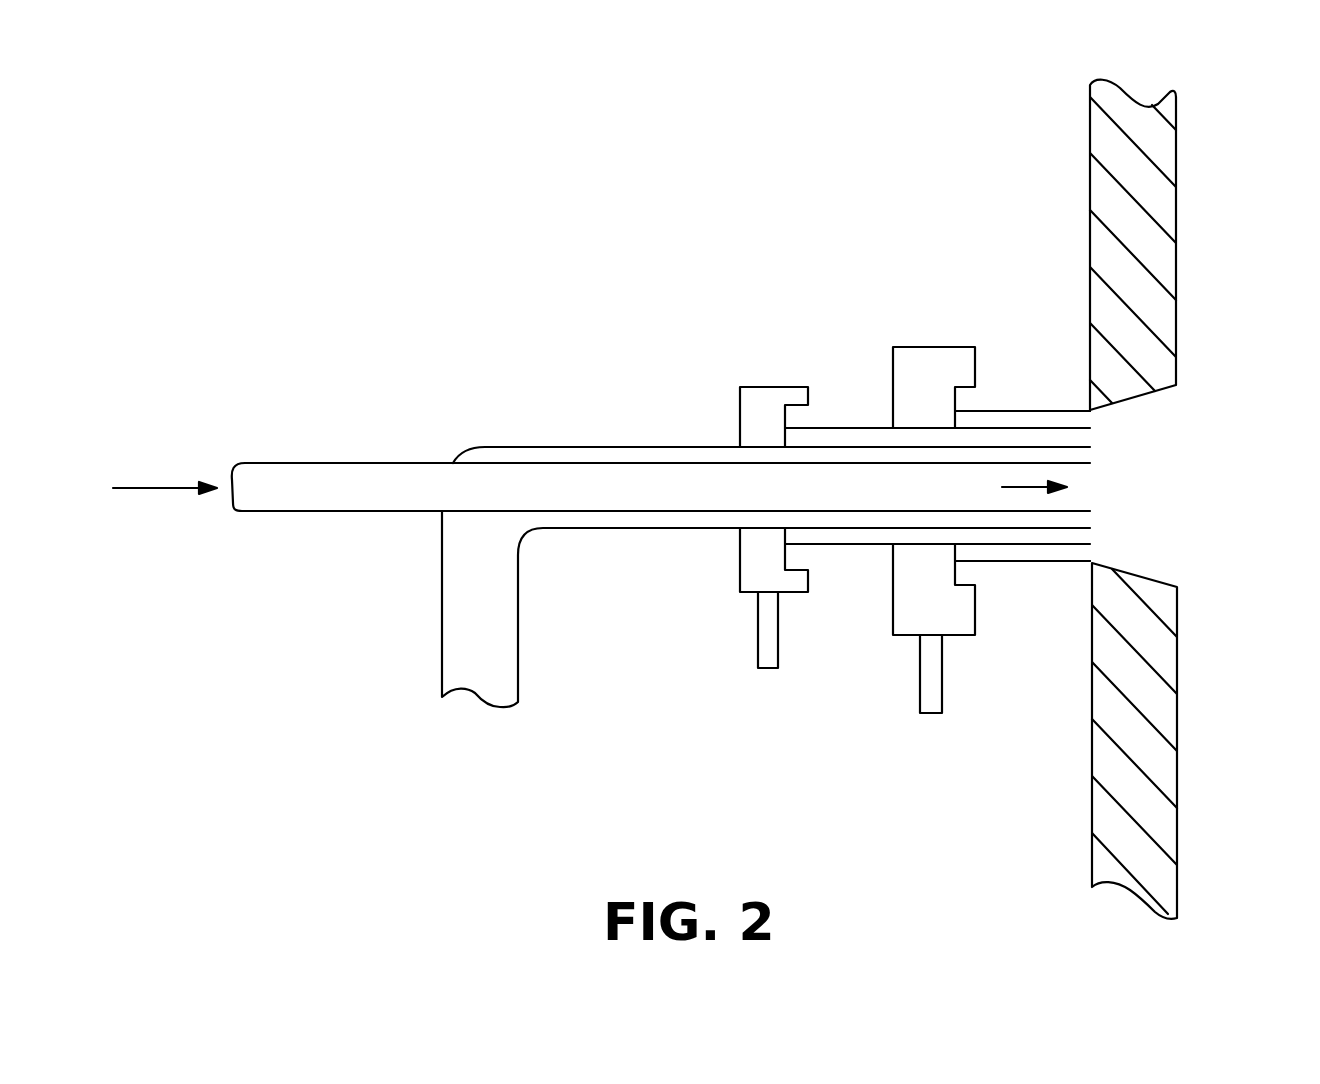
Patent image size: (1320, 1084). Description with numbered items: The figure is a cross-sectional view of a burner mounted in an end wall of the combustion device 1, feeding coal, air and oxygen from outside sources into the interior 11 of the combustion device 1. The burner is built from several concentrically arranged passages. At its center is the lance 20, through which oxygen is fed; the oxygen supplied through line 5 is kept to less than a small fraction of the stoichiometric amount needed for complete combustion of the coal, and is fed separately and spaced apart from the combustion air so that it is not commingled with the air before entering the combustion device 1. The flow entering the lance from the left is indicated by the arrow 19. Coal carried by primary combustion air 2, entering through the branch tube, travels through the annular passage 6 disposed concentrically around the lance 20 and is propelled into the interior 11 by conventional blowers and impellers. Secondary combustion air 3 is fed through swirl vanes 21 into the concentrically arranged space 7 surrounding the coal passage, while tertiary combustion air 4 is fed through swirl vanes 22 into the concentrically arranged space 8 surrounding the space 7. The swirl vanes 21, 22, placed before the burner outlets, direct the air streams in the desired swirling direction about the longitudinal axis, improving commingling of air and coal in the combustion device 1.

The combustion device 1 is at (1176, 175).
The primary combustion air 2 is at (480, 715).
The secondary combustion air 3 is at (766, 687).
The tertiary combustion air 4 is at (932, 732).
The line 5 is at (978, 495).
The annular passage 6 is at (1012, 522).
The concentrically arranged space 7 is at (1043, 538).
The concentrically arranged space 8 is at (1068, 557).
The interior 11 is at (1285, 329).
The gas flow 19 is at (150, 488).
The lance 20 is at (595, 446).
The swirl vanes 21 is at (808, 420).
The swirl vanes 22 is at (975, 397).